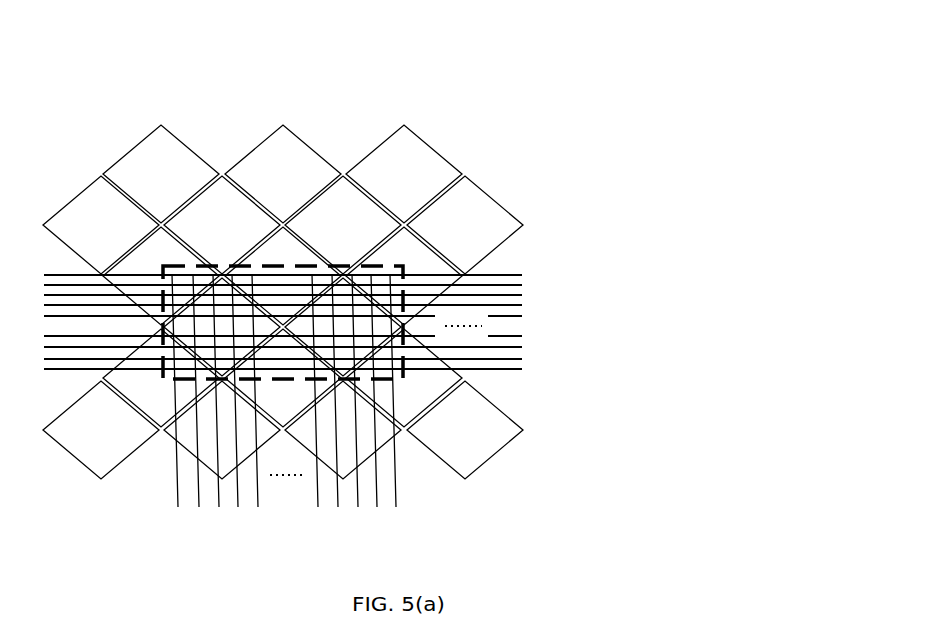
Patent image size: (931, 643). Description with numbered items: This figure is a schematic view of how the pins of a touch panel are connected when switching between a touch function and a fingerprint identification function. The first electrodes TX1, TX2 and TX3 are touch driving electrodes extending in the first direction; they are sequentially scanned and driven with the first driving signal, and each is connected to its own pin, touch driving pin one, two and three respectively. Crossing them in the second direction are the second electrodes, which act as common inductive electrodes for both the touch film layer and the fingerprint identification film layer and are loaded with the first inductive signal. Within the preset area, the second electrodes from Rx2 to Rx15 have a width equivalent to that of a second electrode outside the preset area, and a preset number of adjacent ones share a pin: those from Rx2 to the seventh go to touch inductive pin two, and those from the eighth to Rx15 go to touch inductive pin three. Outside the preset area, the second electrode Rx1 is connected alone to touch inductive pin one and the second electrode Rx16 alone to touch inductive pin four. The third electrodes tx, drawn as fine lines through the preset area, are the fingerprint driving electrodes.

The first electrode TX1 is at (161, 58).
The first electrode TX2 is at (283, 58).
The first electrode TX3 is at (404, 58).
The second electrode Rx1 is at (612, 223).
The second electrode Rx2 is at (612, 289).
The second electrode Rx15 is at (612, 353).
The second electrode Rx16 is at (612, 430).
The third electrode tx is at (396, 505).